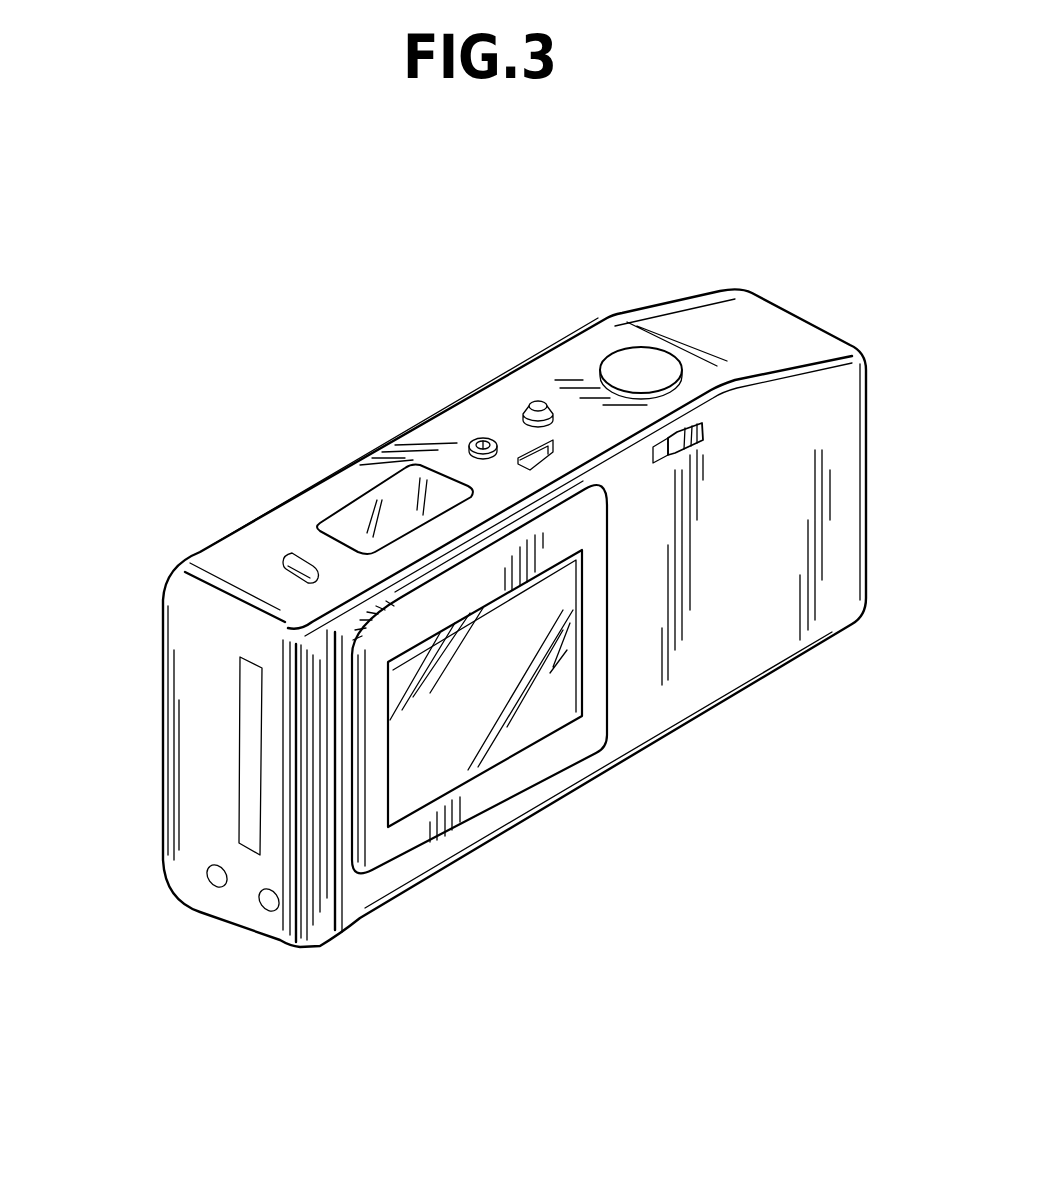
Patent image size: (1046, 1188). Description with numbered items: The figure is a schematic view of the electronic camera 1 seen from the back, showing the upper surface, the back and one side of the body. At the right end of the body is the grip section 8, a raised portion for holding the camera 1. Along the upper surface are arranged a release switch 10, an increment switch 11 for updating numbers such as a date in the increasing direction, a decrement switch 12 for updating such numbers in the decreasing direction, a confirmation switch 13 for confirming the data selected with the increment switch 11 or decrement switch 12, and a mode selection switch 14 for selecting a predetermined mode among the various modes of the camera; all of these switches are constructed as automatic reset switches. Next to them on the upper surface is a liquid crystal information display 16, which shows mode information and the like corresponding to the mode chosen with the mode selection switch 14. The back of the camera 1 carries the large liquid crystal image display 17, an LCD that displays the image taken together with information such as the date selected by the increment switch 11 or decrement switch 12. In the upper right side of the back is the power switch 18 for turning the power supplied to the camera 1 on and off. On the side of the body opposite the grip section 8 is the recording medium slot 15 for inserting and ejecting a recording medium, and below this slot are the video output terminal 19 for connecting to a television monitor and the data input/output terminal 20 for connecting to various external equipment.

The camera 1 is at (673, 712).
The grip section 8 is at (705, 317).
The release switch 10 is at (622, 370).
The increment switch 11 is at (540, 407).
The decrement switch 12 is at (472, 440).
The confirmation switch 13 is at (523, 443).
The mode selection switch 14 is at (288, 560).
The recording medium slot 15 is at (247, 748).
The liquid crystal information display 16 is at (355, 502).
The liquid crystal image display 17 is at (530, 723).
The power switch 18 is at (705, 426).
The video output terminal 19 is at (212, 882).
The data input/output terminal 20 is at (267, 903).